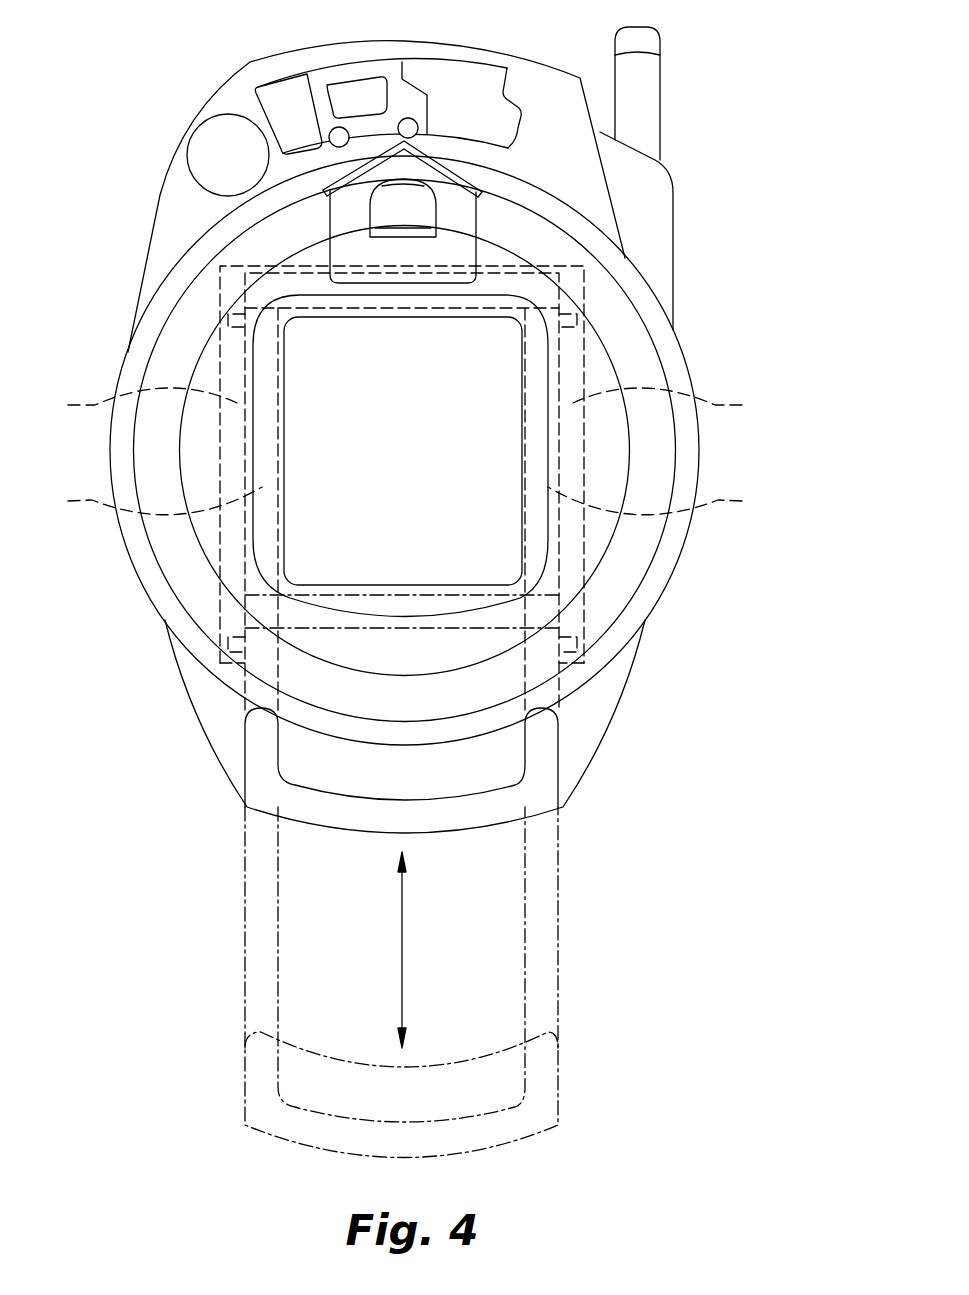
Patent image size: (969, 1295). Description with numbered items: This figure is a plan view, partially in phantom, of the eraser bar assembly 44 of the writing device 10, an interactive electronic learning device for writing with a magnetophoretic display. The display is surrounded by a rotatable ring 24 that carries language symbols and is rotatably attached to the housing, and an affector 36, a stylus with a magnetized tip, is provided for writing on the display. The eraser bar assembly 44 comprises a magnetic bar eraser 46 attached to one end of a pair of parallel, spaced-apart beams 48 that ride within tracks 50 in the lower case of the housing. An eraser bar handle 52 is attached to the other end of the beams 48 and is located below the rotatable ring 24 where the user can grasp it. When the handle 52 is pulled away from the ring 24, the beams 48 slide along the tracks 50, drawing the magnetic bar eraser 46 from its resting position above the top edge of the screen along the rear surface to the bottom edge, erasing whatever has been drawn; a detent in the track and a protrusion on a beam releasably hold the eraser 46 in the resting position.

The writing device 10 is at (153, 201).
The rotatable ring 24 is at (612, 580).
The affector 36 is at (653, 102).
The eraser bar assembly 44 is at (566, 806).
The magnetic bar eraser 46 is at (530, 290).
The spaced-apart beams 48 is at (401, 502).
The tracks 50 is at (401, 403).
The eraser bar handle 52 is at (300, 810).